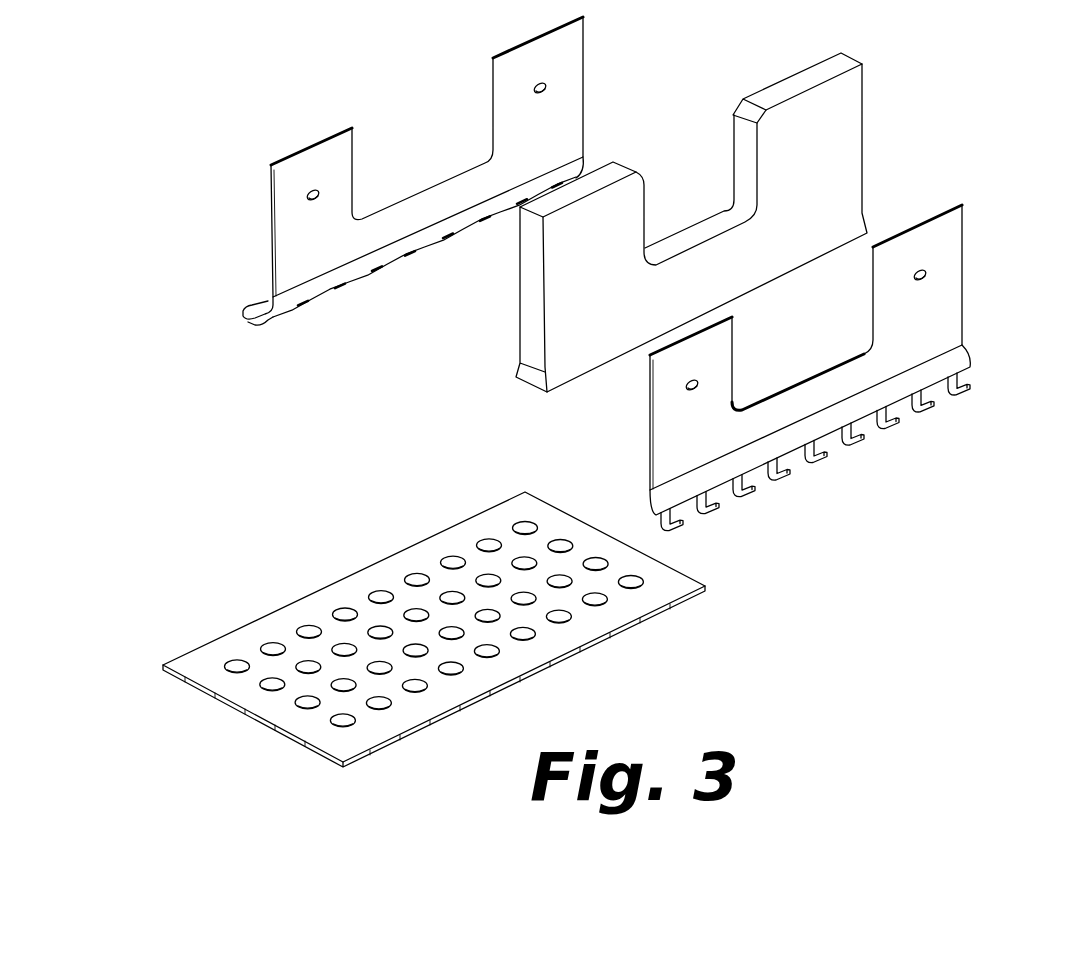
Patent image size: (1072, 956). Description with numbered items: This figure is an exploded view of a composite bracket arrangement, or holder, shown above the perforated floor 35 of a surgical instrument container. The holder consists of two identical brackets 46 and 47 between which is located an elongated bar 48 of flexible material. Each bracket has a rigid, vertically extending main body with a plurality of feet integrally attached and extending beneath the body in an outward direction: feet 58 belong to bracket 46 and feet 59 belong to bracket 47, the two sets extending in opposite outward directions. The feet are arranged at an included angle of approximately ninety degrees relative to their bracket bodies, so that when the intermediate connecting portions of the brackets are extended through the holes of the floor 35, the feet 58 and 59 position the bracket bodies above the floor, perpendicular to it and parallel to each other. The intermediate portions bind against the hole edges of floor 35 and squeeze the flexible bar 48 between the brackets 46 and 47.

The perforated floor 35 is at (680, 576).
The bracket 46 is at (270, 247).
The bracket 47 is at (965, 280).
The elongated bar 48 is at (770, 95).
The feet 58 is at (245, 318).
The feet 59 is at (847, 460).